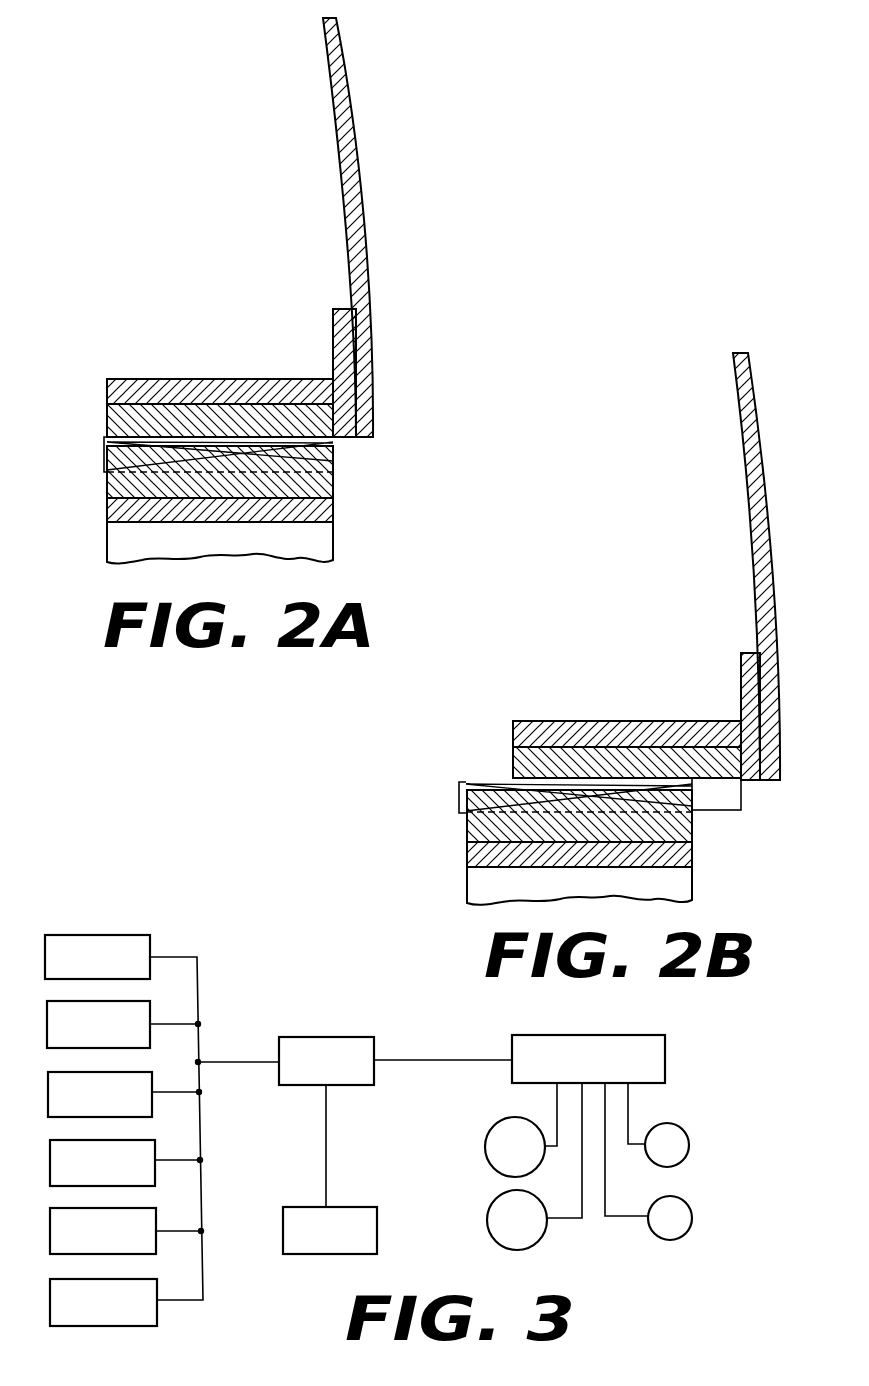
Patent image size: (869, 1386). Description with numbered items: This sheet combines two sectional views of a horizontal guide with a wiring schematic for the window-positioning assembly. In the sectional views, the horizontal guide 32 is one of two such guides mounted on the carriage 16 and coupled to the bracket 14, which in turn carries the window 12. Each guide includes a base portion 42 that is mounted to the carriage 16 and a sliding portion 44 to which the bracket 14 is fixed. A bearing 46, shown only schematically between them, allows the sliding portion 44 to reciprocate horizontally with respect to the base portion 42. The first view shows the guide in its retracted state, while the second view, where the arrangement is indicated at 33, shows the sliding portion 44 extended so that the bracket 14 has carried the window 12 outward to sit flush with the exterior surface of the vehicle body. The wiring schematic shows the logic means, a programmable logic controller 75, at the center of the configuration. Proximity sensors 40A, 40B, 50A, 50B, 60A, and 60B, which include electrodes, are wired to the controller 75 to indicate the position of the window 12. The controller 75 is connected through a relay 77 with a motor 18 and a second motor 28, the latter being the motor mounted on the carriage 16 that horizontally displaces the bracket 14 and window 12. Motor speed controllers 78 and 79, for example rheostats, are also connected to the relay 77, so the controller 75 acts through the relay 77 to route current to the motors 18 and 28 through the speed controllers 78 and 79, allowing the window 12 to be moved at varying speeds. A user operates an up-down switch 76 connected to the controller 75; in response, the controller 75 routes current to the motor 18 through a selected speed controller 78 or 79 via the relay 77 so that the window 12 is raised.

In FIG. 2A, the window 12 is at (370, 218).
In FIG. 2B, the window 12 is at (775, 528).
In FIG. 2A, the bracket 14 is at (333, 318).
In FIG. 2B, the bracket 14 is at (740, 664).
In FIG. 2A, the carriage 16 is at (320, 547).
In FIG. 2B, the carriage 16 is at (680, 882).
In FIG. 2A, the horizontal guide 32 is at (185, 422).
In FIG. 2B, the sensor assembly in second position 33 is at (565, 778).
In FIG. 2A, the base portion 42 is at (107, 497).
In FIG. 2B, the base portion 42 is at (467, 828).
In FIG. 2A, the sliding portion 44 is at (107, 411).
In FIG. 2B, the sliding portion 44 is at (513, 728).
In FIG. 2A, the bearing 46 is at (104, 457).
In FIG. 2B, the bearing 46 is at (459, 796).
In FIG. 3, the proximity sensor 40A is at (80, 968).
In FIG. 3, the proximity sensor 40B is at (81, 1036).
In FIG. 3, the proximity sensor 50A is at (83, 1106).
In FIG. 3, the proximity sensor 50B is at (85, 1174).
In FIG. 3, the proximity sensor 60A is at (86, 1242).
In FIG. 3, the proximity sensor 60B is at (87, 1314).
In FIG. 3, the programmable logic controller 75 is at (355, 1085).
In FIG. 3, the up-down switch 76 is at (318, 1241).
In FIG. 3, the relay 77 is at (665, 1062).
In FIG. 3, the motor speed controller 78 is at (656, 1155).
In FIG. 3, the motor speed controller 79 is at (659, 1228).
In FIG. 3, the second motor 28 is at (503, 1157).
In FIG. 3, the motor 18 is at (505, 1230).